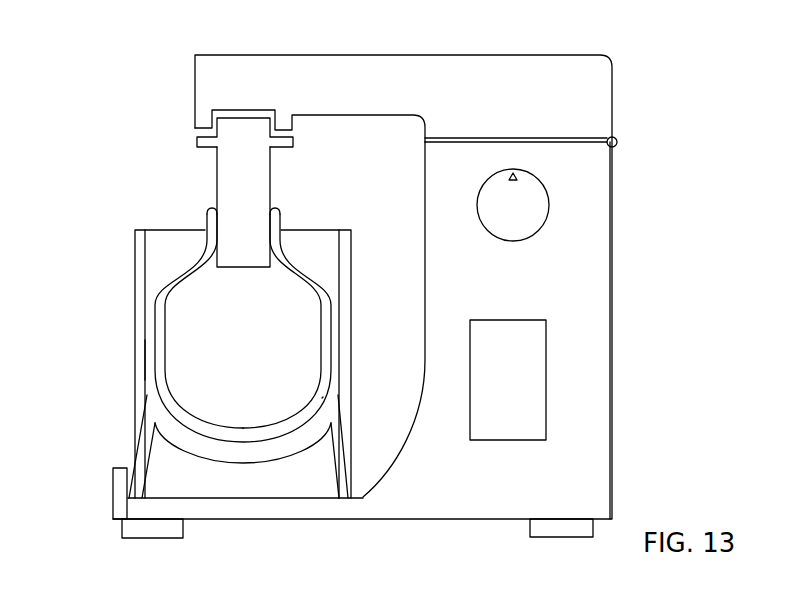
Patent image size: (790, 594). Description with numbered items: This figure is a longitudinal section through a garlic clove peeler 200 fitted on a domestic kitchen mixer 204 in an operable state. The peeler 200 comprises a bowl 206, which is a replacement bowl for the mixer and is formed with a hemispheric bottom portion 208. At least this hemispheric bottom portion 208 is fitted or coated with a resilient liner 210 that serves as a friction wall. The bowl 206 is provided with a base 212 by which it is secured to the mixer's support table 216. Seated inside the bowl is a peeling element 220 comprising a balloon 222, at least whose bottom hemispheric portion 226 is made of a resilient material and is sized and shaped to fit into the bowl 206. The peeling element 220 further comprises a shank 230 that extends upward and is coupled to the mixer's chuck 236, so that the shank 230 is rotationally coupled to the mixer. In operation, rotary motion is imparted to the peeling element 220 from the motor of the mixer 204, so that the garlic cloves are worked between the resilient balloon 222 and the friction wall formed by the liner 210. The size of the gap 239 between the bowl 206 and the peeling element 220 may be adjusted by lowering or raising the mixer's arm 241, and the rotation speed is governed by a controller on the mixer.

The garlic clove peeler 200 is at (133, 153).
The domestic kitchen mixer 204 is at (635, 243).
The bowl 206 is at (131, 292).
The hemispheric bottom portion 208 is at (140, 358).
The resilient liner 210 is at (160, 398).
The base 212 is at (348, 477).
The support table 216 is at (124, 505).
The peeling element 220 is at (206, 232).
The balloon 222 is at (283, 243).
The bottom hemispheric portion 226 is at (278, 326).
The shank 230 is at (233, 163).
The chuck 236 is at (243, 110).
The gap 239 is at (323, 397).
The arm 241 is at (462, 125).